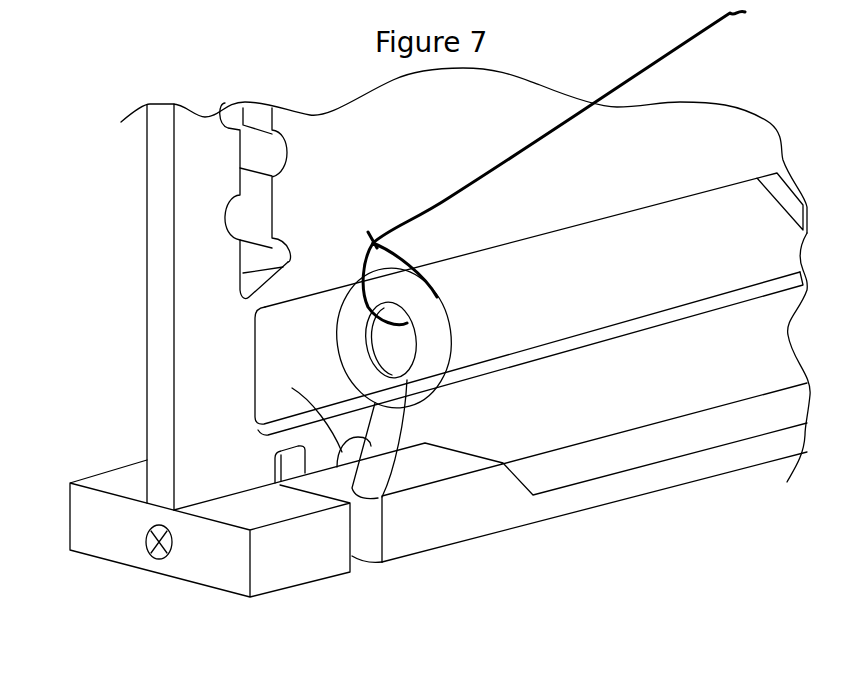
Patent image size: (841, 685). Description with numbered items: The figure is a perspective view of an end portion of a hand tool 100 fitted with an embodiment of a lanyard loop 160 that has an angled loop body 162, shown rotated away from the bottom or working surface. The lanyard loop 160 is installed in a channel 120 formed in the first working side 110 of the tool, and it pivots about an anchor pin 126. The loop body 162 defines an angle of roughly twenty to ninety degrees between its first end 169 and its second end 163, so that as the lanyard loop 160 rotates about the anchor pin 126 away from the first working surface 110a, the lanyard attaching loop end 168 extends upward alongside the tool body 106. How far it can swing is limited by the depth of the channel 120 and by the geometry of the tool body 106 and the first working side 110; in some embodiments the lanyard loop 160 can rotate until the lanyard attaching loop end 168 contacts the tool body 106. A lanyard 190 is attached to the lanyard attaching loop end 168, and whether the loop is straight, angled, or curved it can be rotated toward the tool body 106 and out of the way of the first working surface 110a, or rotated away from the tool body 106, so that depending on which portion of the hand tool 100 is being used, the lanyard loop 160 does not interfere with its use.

The hand tool 100 is at (145, 223).
The tool body 106 is at (196, 320).
The first working side 110 is at (308, 548).
The first working surface 110a is at (660, 504).
The channel 120 is at (365, 540).
The anchor pin 126 is at (148, 543).
The lanyard loop 160 is at (403, 445).
The loop body 162 is at (377, 460).
The second end 163 is at (289, 487).
The lanyard attaching loop end 168 is at (433, 318).
The first end 169 is at (397, 418).
The lanyard 190 is at (693, 50).